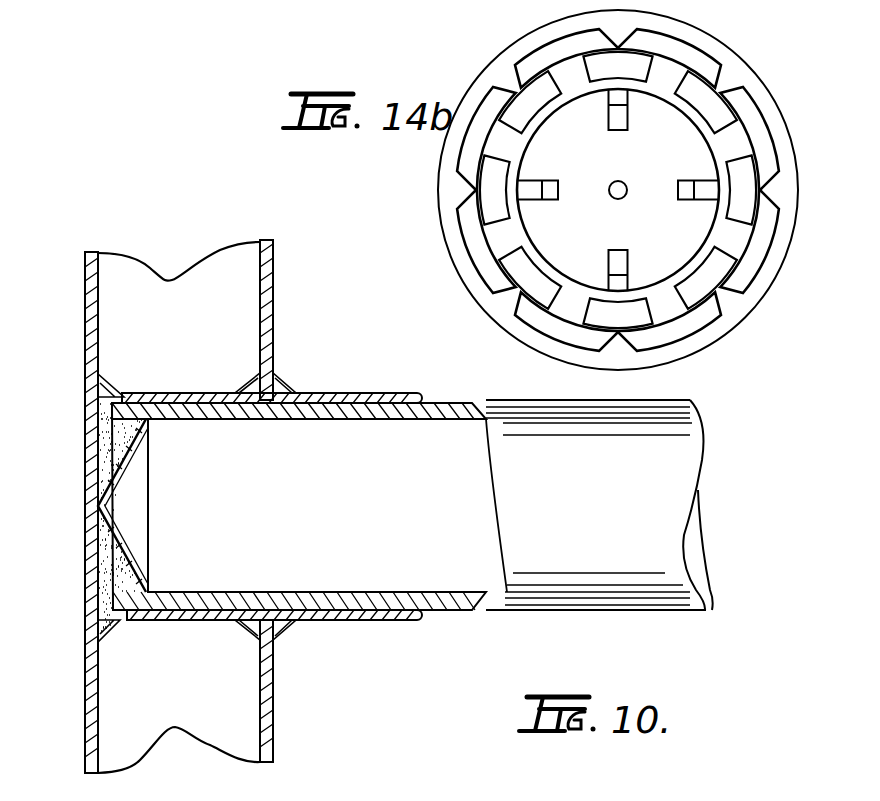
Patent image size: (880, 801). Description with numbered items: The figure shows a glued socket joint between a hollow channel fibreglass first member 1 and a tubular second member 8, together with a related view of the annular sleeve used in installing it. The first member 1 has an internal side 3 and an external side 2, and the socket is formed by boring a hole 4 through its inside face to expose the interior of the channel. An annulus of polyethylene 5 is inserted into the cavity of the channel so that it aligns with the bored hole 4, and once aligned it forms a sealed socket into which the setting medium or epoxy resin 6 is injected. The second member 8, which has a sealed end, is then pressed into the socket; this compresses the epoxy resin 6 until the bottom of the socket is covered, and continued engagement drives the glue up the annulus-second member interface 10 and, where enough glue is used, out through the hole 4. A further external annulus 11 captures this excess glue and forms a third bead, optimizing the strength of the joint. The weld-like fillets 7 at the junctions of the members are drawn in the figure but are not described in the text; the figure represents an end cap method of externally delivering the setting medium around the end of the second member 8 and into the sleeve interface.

The first member 1 is at (227, 265).
The external side 2 is at (87, 288).
The internal side 3 is at (273, 297).
The hole 4 is at (268, 593).
The annulus of polyethylene 5 is at (186, 393).
The epoxy resin 6 is at (243, 419).
The weld seams 7 is at (118, 388).
The second member 8 is at (668, 528).
The annulus-second member interface 10 is at (180, 622).
The external annulus 11 is at (356, 622).